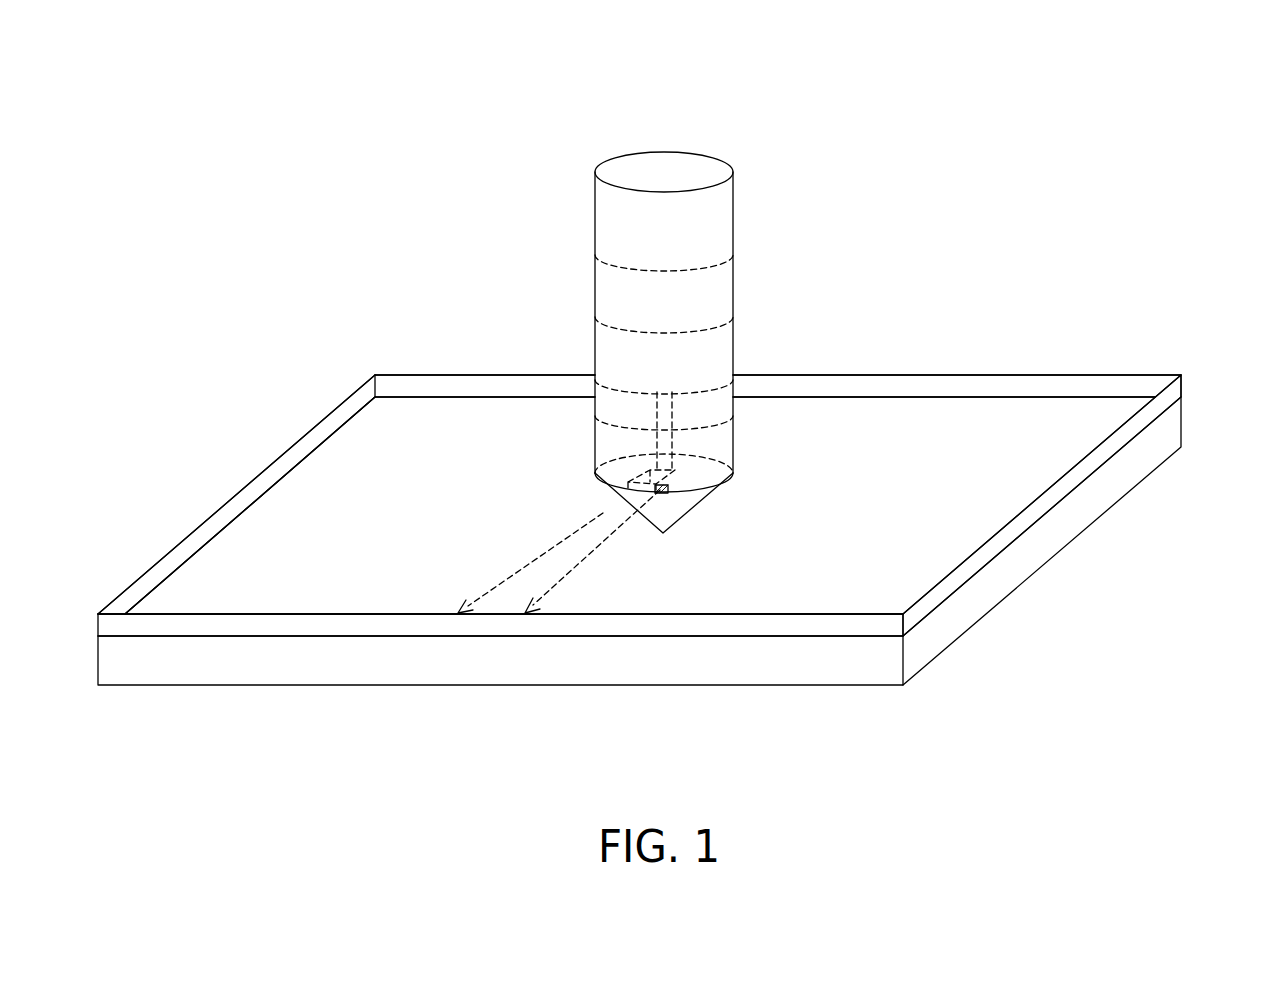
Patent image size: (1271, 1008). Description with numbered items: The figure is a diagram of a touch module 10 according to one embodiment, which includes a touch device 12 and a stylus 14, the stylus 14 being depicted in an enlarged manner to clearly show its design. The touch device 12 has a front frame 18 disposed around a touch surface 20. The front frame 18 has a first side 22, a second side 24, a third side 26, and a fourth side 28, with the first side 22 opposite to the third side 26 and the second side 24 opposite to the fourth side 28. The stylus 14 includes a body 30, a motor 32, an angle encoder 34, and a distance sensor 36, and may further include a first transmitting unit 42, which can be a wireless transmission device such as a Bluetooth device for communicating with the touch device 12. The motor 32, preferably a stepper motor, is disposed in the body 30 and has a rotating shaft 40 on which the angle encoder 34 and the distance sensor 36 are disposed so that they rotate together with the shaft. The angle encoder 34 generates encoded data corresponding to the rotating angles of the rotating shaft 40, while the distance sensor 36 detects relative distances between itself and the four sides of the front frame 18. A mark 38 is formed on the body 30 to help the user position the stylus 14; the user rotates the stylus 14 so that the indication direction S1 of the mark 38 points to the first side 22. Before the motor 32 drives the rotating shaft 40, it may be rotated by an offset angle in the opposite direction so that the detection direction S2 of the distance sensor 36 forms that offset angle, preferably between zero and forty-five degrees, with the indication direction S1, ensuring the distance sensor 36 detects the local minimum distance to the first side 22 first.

The touch module 10 is at (296, 130).
The touch device 12 is at (1028, 588).
The stylus 14 is at (694, 150).
The front frame 18 is at (1103, 373).
The touch surface 20 is at (1008, 471).
The first side 22 is at (710, 625).
The second side 24 is at (1073, 480).
The third side 26 is at (995, 373).
The fourth side 28 is at (268, 466).
The body 30 is at (733, 210).
The motor 32 is at (728, 341).
The angle encoder 34 is at (728, 392).
The distance sensor 36 is at (645, 470).
The mark 38 is at (668, 492).
The rotating shaft 40 is at (672, 440).
The first transmitting unit 42 is at (612, 296).
The indication direction S1 is at (603, 543).
The detection direction S2 is at (540, 557).